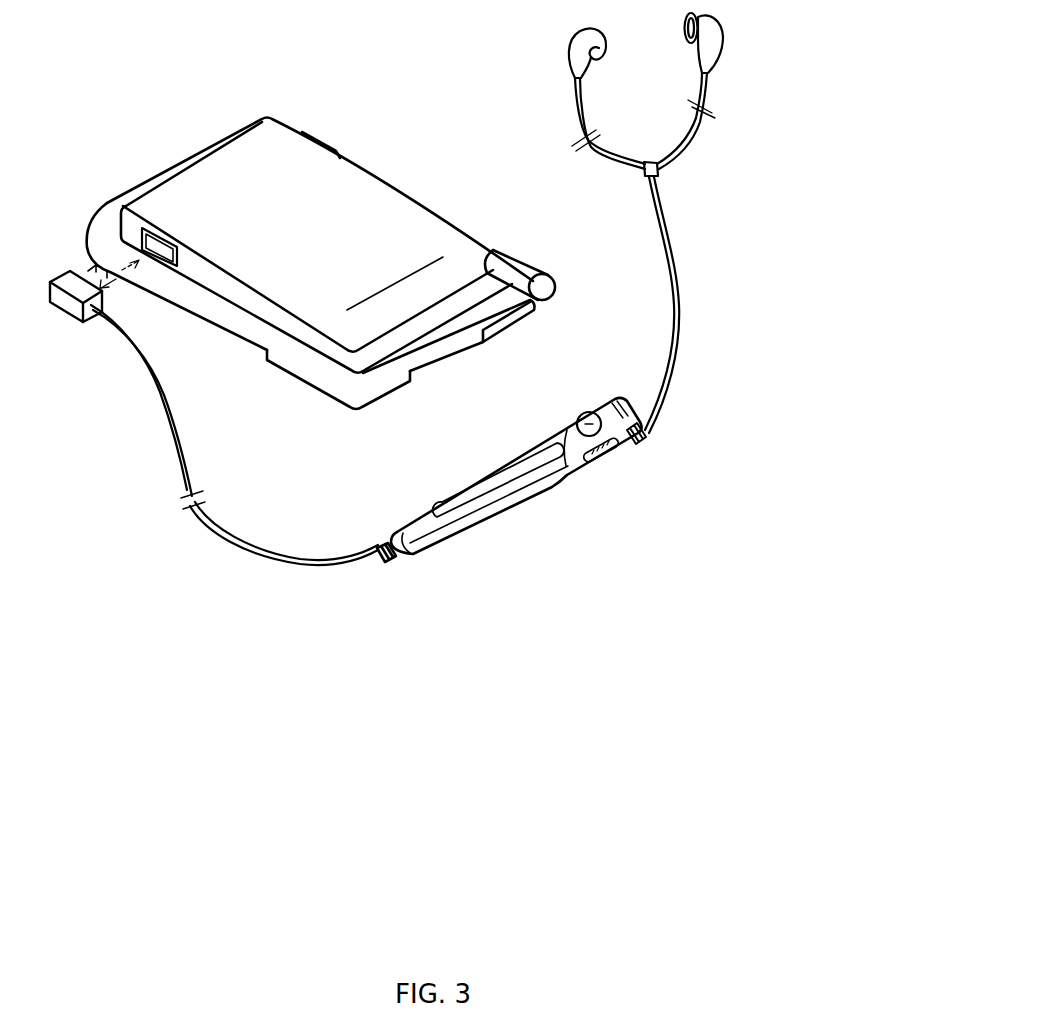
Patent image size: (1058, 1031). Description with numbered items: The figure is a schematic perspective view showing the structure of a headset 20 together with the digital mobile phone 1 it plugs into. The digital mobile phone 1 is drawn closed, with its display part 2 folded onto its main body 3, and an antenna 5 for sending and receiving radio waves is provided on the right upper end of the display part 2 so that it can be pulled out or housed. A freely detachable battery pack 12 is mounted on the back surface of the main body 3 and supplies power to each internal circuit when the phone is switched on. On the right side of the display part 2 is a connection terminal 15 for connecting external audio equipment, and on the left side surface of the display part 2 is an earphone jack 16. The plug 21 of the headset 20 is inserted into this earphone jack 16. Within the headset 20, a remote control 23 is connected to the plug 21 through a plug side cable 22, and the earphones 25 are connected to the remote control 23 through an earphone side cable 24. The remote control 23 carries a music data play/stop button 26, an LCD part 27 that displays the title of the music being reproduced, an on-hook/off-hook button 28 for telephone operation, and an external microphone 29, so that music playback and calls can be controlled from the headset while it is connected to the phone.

The digital mobile phone 1 is at (325, 223).
The display part 2 is at (320, 243).
The main body 3 is at (311, 294).
The antenna 5 is at (524, 268).
The battery pack 12 is at (338, 390).
The connection terminal 15 is at (341, 136).
The earphone jack 16 is at (159, 293).
The headset 20 is at (479, 331).
The plug 21 is at (63, 315).
The plug side cable 22 is at (234, 435).
The remote control 23 is at (655, 466).
The earphone side cable 24 is at (688, 305).
The earphones 25 is at (727, 5).
The music data play/stop button 26 is at (620, 470).
The LCD part 27 is at (498, 465).
The on-hook/off-hook button 28 is at (574, 393).
The external microphone 29 is at (780, 434).